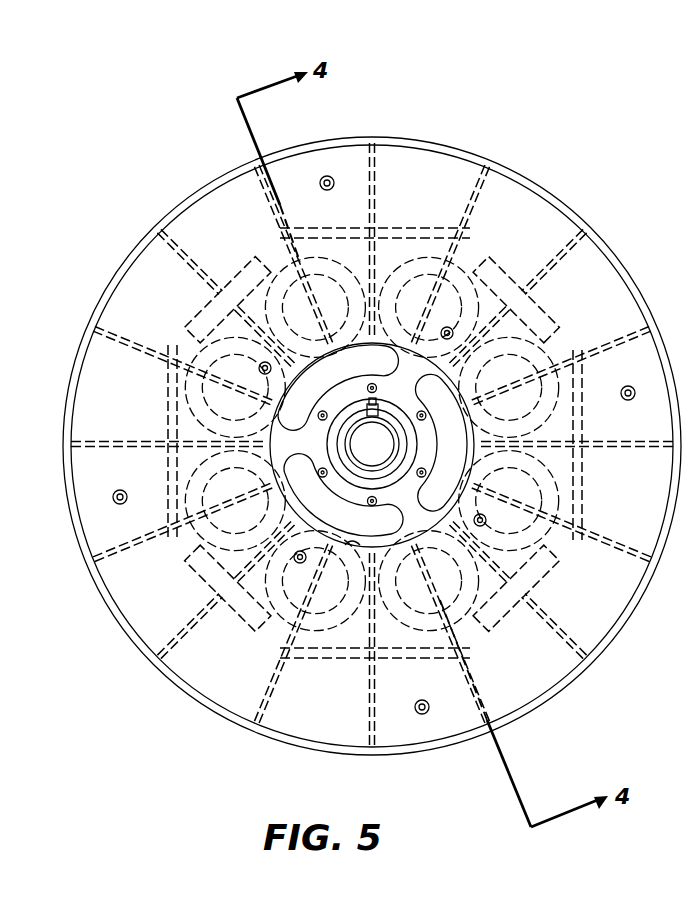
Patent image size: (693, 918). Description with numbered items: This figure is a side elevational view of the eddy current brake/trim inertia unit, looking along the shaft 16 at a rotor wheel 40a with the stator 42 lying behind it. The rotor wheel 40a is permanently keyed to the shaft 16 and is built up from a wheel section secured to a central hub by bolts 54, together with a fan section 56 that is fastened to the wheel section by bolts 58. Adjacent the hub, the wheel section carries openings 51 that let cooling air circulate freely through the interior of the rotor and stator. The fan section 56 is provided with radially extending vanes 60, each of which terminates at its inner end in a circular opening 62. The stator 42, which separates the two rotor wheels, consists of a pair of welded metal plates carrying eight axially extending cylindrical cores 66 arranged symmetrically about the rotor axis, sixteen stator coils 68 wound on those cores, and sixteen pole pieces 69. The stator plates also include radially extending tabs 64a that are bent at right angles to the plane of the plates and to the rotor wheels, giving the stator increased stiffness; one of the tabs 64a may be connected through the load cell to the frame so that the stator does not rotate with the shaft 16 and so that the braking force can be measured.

The shaft 16 is at (383, 455).
The rotor wheel 40a is at (555, 217).
The stator 42 is at (668, 272).
The openings 51 is at (345, 385).
The bolts 54 is at (323, 416).
The fan section 56 is at (612, 630).
The bolts 58 is at (327, 176).
The vanes 60 is at (558, 250).
The circular openings 62 is at (352, 541).
The tabs 64a is at (398, 228).
The cylindrical cores 66 is at (290, 287).
The stator coils 68 is at (307, 310).
The pole pieces 69 is at (483, 263).